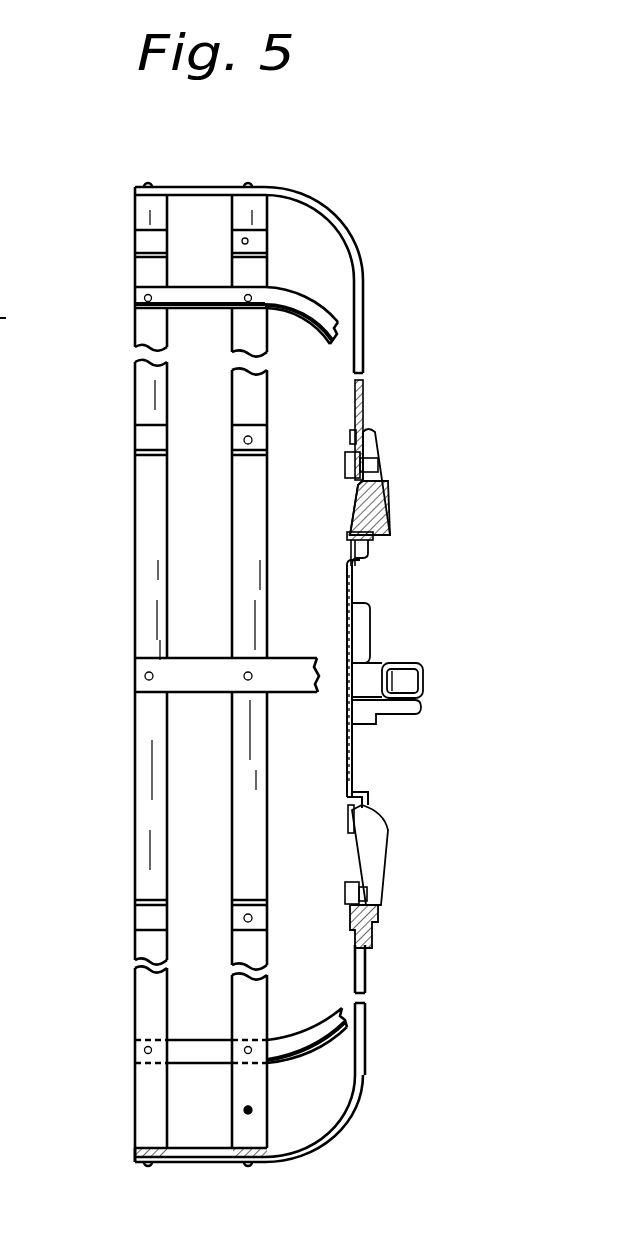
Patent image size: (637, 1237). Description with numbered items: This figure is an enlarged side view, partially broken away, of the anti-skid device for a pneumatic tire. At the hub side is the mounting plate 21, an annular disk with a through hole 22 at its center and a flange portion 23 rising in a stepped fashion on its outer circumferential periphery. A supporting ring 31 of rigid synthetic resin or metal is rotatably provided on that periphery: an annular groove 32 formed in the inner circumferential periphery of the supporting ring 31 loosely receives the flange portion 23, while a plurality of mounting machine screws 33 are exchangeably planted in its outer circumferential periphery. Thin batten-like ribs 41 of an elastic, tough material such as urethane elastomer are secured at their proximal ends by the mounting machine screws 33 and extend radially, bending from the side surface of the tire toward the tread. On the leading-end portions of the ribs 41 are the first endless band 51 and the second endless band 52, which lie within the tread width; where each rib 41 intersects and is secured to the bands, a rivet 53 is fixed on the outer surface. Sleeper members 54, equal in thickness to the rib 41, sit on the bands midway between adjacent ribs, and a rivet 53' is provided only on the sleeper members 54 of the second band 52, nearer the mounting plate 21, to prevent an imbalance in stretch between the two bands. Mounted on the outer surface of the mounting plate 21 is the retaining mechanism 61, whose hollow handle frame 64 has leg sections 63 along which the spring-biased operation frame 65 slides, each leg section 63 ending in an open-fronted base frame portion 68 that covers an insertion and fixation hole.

The mounting plate 21 is at (360, 770).
The through hole 22 is at (347, 740).
The flange portion 23 is at (372, 805).
The supporting ring 31 is at (391, 512).
The annular groove 32 is at (350, 553).
The mounting machine screw 33 is at (347, 462).
The rib 41 is at (300, 312).
The first endless band 51 is at (135, 825).
The second endless band 52 is at (232, 803).
The rivet 53 is at (227, 678).
The rivet 53' is at (259, 590).
The sleeper member 54 is at (180, 918).
The retaining mechanism 61 is at (426, 664).
The leg section 63 is at (390, 715).
The handle frame 64 is at (428, 680).
The operation frame 65 is at (385, 662).
The base frame portion 68 is at (360, 607).